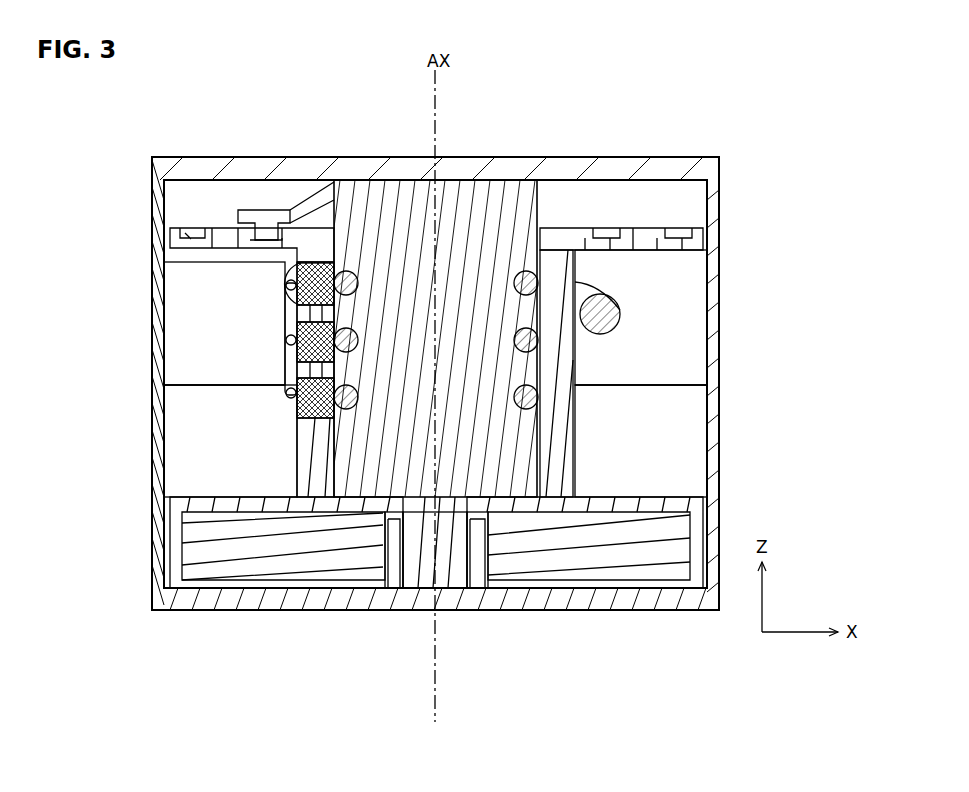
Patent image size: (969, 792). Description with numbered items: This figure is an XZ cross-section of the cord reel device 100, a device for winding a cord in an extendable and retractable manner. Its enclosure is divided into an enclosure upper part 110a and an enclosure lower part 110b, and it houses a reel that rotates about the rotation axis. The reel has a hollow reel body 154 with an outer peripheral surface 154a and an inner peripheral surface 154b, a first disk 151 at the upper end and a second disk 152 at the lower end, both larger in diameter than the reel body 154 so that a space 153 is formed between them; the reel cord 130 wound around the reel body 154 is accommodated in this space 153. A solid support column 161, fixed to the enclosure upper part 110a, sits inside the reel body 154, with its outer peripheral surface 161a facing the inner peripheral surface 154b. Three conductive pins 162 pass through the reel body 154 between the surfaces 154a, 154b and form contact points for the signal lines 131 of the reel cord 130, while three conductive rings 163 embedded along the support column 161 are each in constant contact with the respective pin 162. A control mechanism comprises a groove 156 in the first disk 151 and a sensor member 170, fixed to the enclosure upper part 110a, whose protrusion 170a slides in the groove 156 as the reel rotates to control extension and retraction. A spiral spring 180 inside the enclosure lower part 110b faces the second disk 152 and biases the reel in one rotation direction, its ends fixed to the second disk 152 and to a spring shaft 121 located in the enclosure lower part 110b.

The cord reel device 100 is at (613, 106).
The enclosure upper part 110a is at (720, 258).
The enclosure lower part 110b is at (720, 480).
The spring shaft 121 is at (477, 550).
The reel cord 130 is at (621, 318).
The signal lines 131 is at (283, 293).
The first disk 151 is at (643, 237).
The second disk 152 is at (650, 505).
The space 153 is at (258, 369).
The reel body 154 is at (555, 229).
The outer peripheral surface 154a is at (294, 432).
The inner peripheral surface 154b is at (336, 448).
The groove 156 is at (256, 238).
The support column 161 is at (432, 290).
The outer peripheral surface 161a is at (538, 185).
The pin 162 is at (296, 295).
The ring 163 is at (346, 280).
The sensor member 170 is at (268, 218).
The protrusion 170a is at (250, 236).
The spiral spring 180 is at (290, 560).